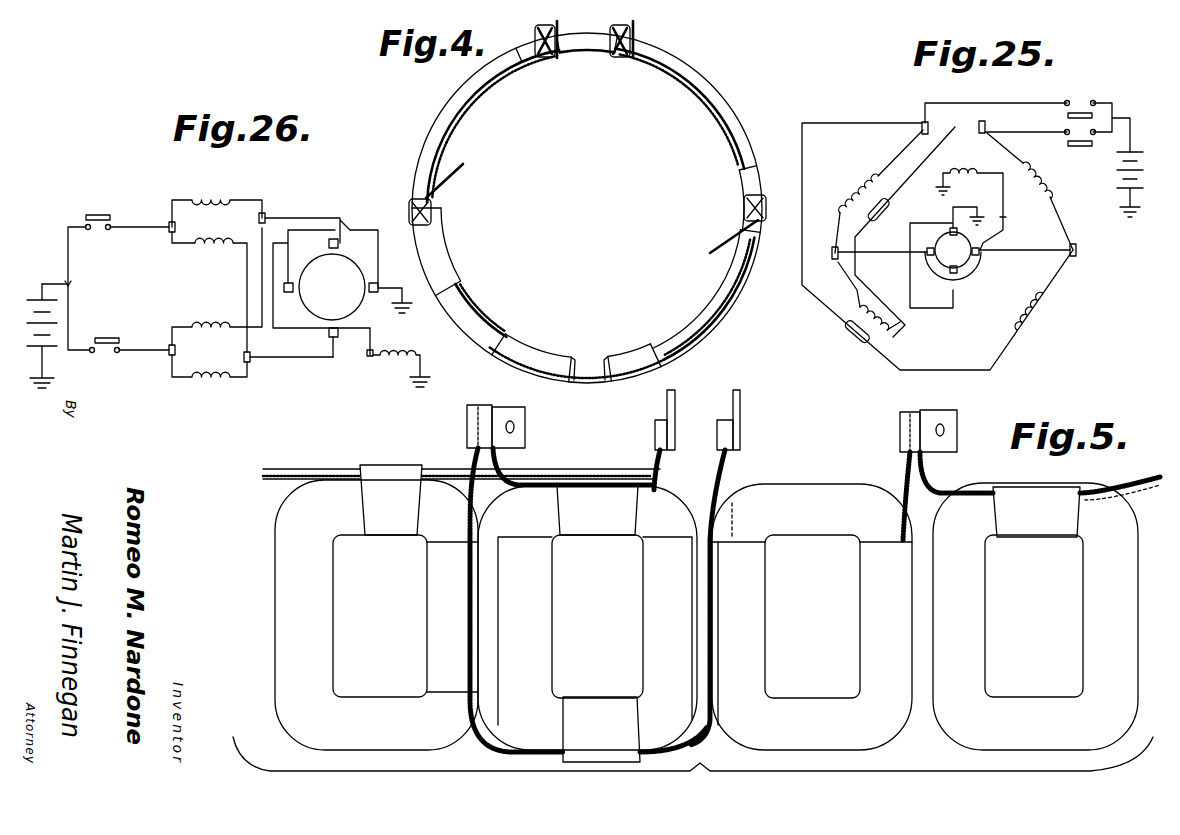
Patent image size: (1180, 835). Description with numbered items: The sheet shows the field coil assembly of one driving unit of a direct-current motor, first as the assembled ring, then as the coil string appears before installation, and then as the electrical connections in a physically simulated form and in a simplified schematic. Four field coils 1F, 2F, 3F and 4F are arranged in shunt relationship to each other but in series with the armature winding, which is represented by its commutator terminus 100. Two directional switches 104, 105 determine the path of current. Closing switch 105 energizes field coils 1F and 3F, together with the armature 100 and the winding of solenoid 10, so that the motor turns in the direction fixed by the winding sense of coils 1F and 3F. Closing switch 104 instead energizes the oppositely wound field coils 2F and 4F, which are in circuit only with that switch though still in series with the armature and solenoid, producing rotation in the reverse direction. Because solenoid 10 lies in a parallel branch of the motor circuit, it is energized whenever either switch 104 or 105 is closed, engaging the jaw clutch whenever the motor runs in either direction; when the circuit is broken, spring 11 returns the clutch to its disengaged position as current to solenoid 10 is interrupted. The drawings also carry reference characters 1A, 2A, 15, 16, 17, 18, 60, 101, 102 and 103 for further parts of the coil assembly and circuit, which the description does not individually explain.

In FIG. 4, the field coil 1F is at (479, 310).
In FIG. 26, the field coil 1F is at (212, 330).
In FIG. 25, the field coil 1F is at (894, 338).
In FIG. 5, the field coil 1F is at (376, 615).
In FIG. 4, the field coil 2F is at (485, 99).
In FIG. 26, the field coil 2F is at (218, 202).
In FIG. 25, the field coil 2F is at (857, 190).
In FIG. 5, the field coil 2F is at (587, 618).
In FIG. 4, the field coil 3F is at (727, 116).
In FIG. 26, the field coil 3F is at (217, 380).
In FIG. 25, the field coil 3F is at (1052, 193).
In FIG. 5, the field coil 3F is at (812, 617).
In FIG. 4, the field coil 4F is at (704, 295).
In FIG. 26, the field coil 4F is at (217, 249).
In FIG. 25, the field coil 4F is at (1043, 325).
In FIG. 5, the field coil 4F is at (1035, 616).
In FIG. 25, the auxiliary pole piece 1A is at (857, 341).
In FIG. 5, the auxiliary pole piece 1A is at (391, 500).
In FIG. 25, the auxiliary pole piece 2A is at (889, 211).
In FIG. 5, the auxiliary pole piece 2A is at (598, 624).
In FIG. 26, the solenoid 10 is at (397, 359).
In FIG. 25, the solenoid 10 is at (977, 173).
In FIG. 26, the spring 11 is at (168, 347).
In FIG. 4, the terminal 15 is at (433, 210).
In FIG. 26, the terminal 15 is at (267, 217).
In FIG. 25, the terminal 15 is at (832, 253).
In FIG. 5, the terminal 15 is at (525, 433).
In FIG. 4, the terminal 16 is at (536, 31).
In FIG. 26, the terminal 16 is at (172, 233).
In FIG. 25, the terminal 16 is at (921, 125).
In FIG. 4, the terminal 17 is at (633, 36).
In FIG. 25, the terminal 17 is at (985, 124).
In FIG. 4, the terminal 18 is at (766, 208).
In FIG. 26, the terminal 18 is at (251, 358).
In FIG. 25, the terminal 18 is at (1076, 250).
In FIG. 5, the terminal 18 is at (943, 414).
In FIG. 26, the contact 60 is at (366, 334).
In FIG. 25, the contact 60 is at (1006, 217).
In FIG. 26, the commutator 100 is at (355, 287).
In FIG. 25, the motor armature 101 is at (985, 272).
In FIG. 26, the brush holder frame 102 is at (353, 232).
In FIG. 25, the brush holder frame 102 is at (912, 272).
In FIG. 26, the battery 103 is at (45, 289).
In FIG. 25, the battery 103 is at (1125, 192).
In FIG. 26, the directional switch 104 is at (99, 214).
In FIG. 25, the directional switch 104 is at (1068, 115).
In FIG. 26, the directional switch 105 is at (105, 338).
In FIG. 25, the directional switch 105 is at (1076, 144).